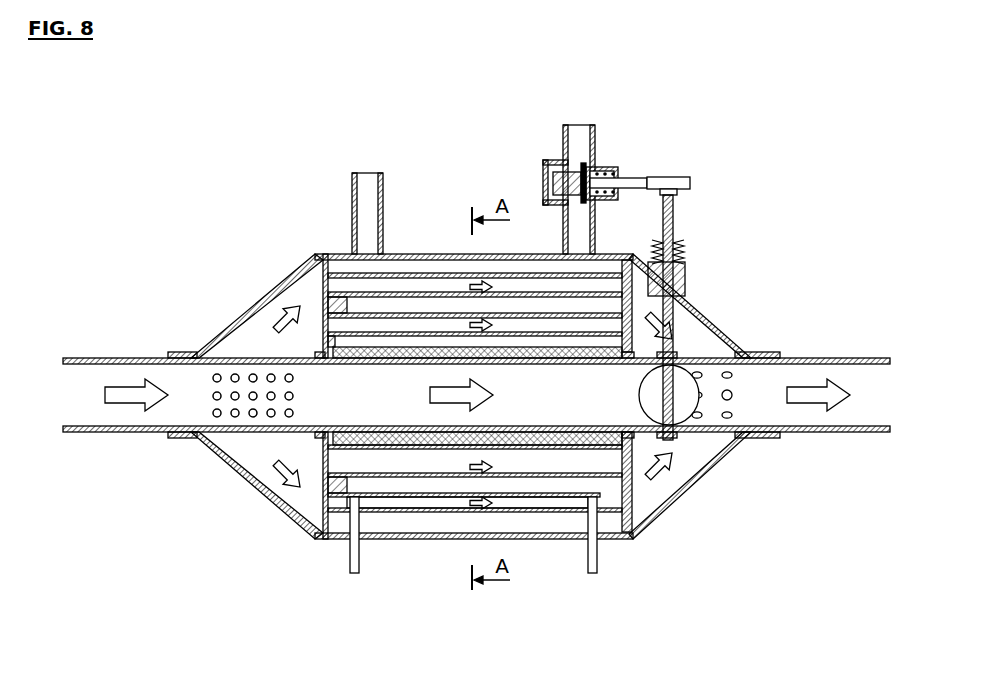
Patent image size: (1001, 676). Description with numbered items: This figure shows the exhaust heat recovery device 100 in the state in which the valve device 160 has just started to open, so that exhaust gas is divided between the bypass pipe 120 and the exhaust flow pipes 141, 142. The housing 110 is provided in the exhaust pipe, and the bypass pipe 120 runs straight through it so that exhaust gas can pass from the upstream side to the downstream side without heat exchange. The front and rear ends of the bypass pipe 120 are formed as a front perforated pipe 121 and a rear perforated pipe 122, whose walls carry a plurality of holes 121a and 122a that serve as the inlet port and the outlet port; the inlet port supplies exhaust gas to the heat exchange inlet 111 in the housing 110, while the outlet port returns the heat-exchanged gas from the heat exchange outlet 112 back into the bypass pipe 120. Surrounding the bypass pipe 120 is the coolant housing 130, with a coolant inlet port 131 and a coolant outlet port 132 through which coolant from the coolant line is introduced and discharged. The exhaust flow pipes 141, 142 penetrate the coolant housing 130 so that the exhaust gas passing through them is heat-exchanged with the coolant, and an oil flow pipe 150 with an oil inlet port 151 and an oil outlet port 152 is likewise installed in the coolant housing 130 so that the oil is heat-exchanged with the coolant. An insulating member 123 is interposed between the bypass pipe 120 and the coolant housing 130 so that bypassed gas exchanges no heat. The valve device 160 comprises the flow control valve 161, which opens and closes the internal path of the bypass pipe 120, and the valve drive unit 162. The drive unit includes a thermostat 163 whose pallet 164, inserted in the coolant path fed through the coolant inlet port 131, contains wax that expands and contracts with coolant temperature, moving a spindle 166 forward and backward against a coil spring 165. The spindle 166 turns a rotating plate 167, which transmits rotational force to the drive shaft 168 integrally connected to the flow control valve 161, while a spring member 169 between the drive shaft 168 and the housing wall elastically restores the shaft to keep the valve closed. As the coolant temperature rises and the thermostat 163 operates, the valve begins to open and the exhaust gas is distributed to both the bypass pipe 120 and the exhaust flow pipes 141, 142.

The exhaust heat recovery device 100 is at (201, 480).
The housing 110 is at (263, 358).
The heat exchange inlet 111 is at (253, 457).
The heat exchange outlet 112 is at (677, 465).
The bypass pipe 120 is at (108, 436).
The front perforated pipe 121 is at (243, 352).
The holes 121a is at (218, 358).
The rear perforated pipe 122 is at (694, 350).
The holes 122a is at (732, 430).
The insulating member 123 is at (547, 447).
The coolant housing 130 is at (300, 254).
The coolant inlet port 131 is at (595, 143).
The coolant outlet port 132 is at (384, 210).
The exhaust flow pipe 141 is at (323, 500).
The exhaust flow pipe 142 is at (323, 463).
The oil flow pipe 150 is at (422, 485).
The oil inlet port 151 is at (598, 555).
The oil outlet port 152 is at (359, 555).
The valve device 160 is at (712, 372).
The flow control valve 161 is at (683, 398).
The valve drive unit 162 is at (704, 180).
The thermostat 163 is at (620, 166).
The pallet 164 is at (547, 160).
The coil spring 165 is at (553, 188).
The spindle 166 is at (640, 178).
The rotating plate 167 is at (683, 188).
The drive shaft 168 is at (676, 205).
The spring member 169 is at (685, 248).